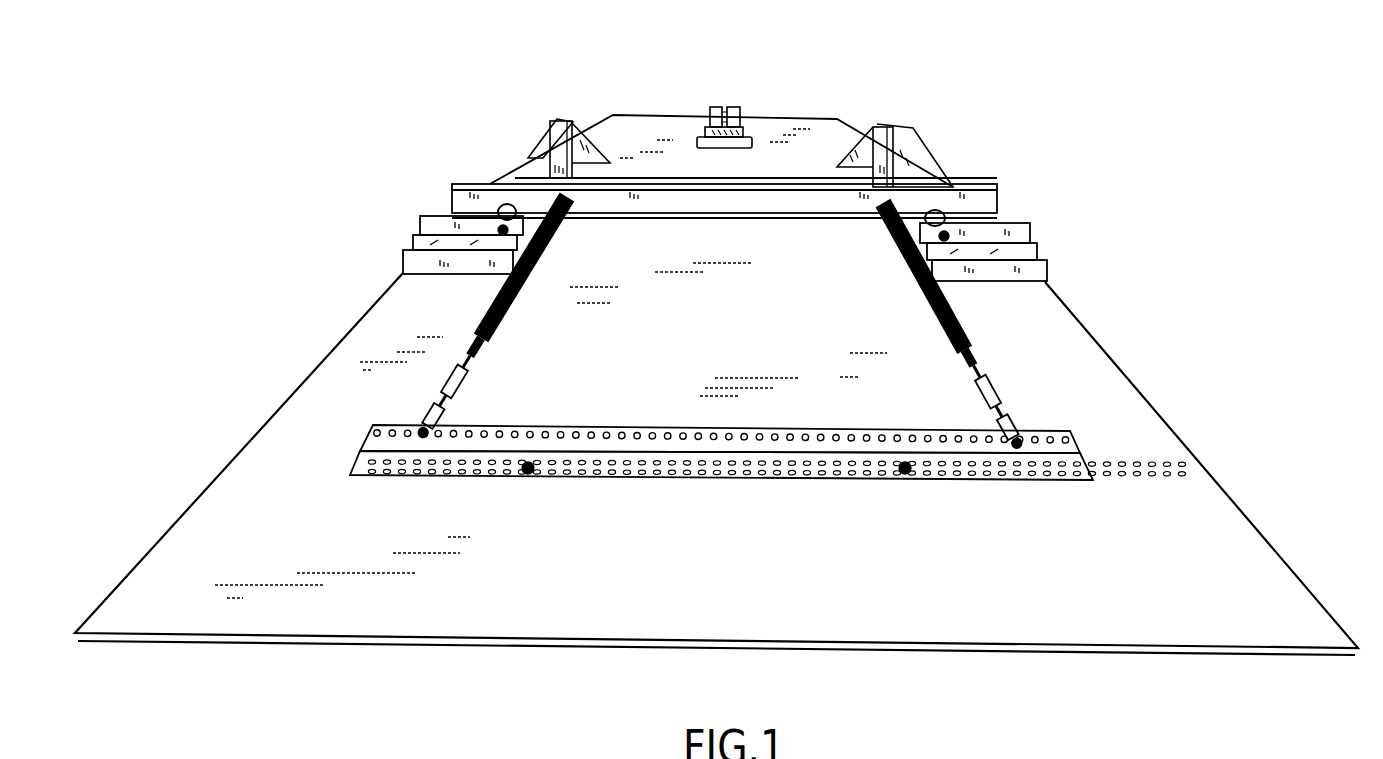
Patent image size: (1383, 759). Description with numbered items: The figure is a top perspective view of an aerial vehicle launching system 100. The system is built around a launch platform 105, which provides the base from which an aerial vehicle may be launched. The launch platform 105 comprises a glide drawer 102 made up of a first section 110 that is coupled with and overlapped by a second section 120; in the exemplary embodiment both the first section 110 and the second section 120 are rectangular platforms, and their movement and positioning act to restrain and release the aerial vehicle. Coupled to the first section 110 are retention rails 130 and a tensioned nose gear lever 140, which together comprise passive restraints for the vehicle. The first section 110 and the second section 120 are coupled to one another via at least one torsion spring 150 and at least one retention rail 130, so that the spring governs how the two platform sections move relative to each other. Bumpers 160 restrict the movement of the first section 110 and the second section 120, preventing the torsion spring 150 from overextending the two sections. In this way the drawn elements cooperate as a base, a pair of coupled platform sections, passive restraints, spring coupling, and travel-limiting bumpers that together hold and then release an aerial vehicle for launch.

The aerial vehicle launching system 100 is at (1134, 704).
The glide drawer 102 is at (641, 236).
The launch platform 105 is at (352, 244).
The first section 110 is at (520, 153).
The second section 120 is at (333, 380).
The retention rail 130 is at (550, 121).
The tensioned nose gear lever 140 is at (718, 107).
The torsion spring 150 is at (507, 315).
The bumper 160 is at (500, 205).